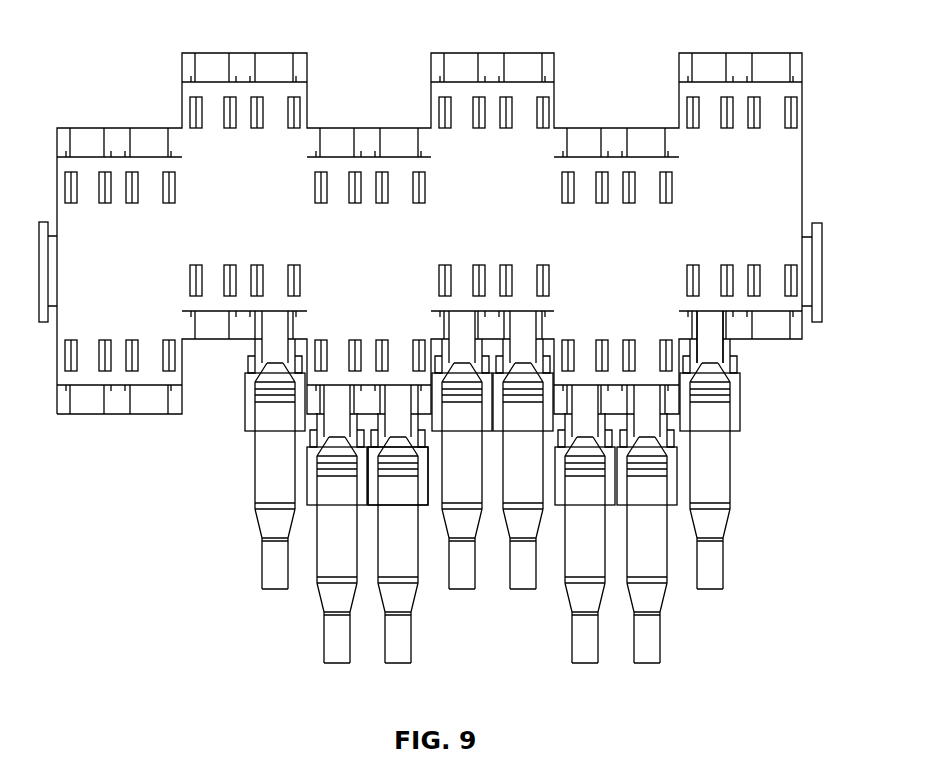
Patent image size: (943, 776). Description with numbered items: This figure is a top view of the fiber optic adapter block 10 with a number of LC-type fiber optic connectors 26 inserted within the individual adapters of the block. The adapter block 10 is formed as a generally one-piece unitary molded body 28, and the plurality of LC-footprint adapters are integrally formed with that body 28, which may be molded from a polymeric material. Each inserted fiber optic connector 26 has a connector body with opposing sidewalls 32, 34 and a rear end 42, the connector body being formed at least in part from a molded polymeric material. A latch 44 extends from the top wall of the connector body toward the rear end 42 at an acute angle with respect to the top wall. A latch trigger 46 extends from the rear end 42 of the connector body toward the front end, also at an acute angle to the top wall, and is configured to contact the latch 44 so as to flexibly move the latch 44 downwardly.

The fiber optic adapter block 10 is at (124, 32).
The one-piece unitary molded body 28 is at (792, 173).
The fiber optic connector 26 is at (752, 412).
The sidewall 34 is at (243, 414).
The latch 44 is at (708, 345).
The latch trigger 46 is at (657, 487).
The rear end 42 is at (398, 505).
The sidewall 32 is at (430, 477).